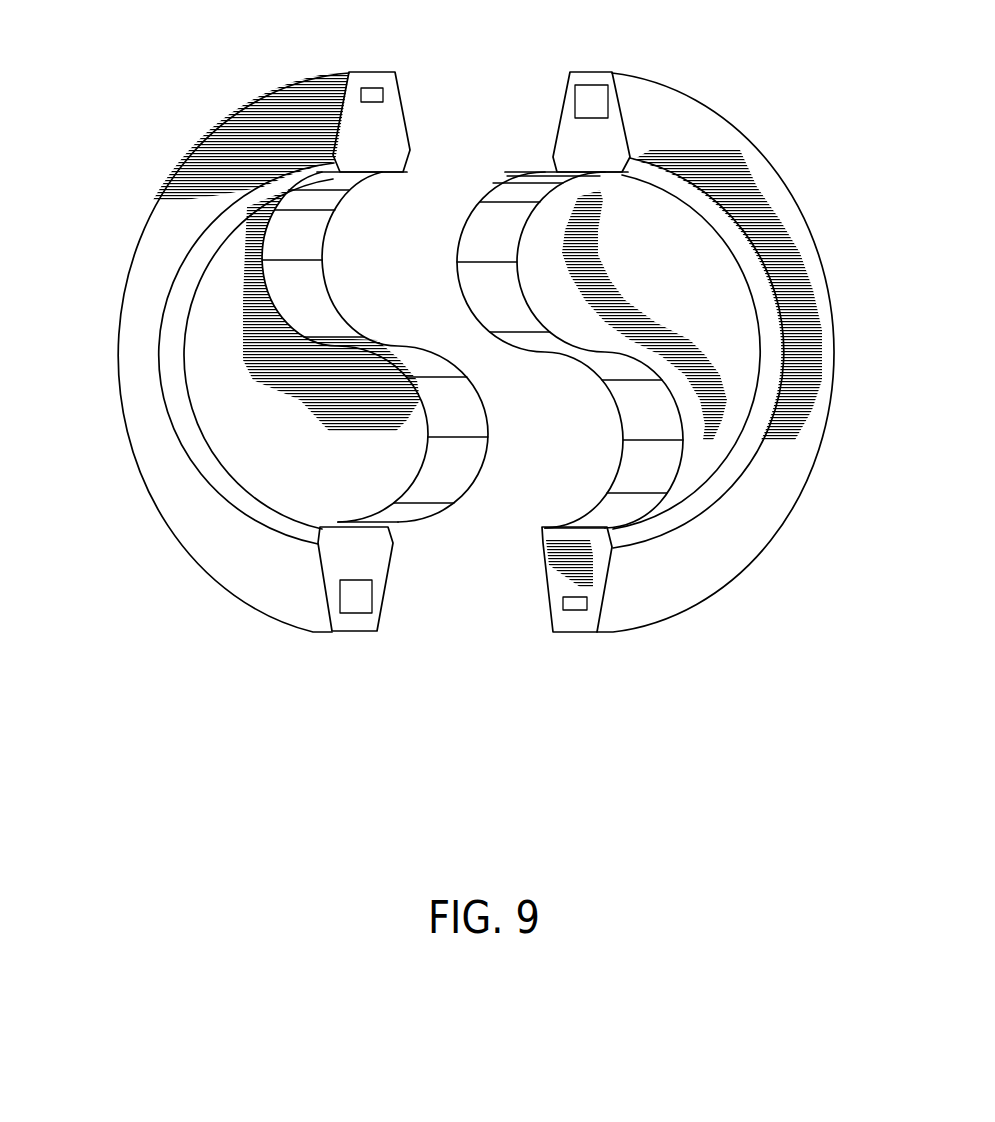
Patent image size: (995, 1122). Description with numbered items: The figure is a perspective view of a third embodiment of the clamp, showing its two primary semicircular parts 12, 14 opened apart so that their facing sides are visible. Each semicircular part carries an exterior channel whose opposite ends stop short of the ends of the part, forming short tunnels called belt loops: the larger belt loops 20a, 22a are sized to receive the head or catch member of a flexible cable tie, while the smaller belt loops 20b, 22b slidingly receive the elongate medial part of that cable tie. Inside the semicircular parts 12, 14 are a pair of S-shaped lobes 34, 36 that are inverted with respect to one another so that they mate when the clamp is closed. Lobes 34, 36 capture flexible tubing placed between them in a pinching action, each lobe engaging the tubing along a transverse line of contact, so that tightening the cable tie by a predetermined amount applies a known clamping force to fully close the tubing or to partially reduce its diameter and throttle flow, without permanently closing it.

The semicircular part 12 is at (136, 226).
The semicircular part 14 is at (784, 172).
The belt loop 20a is at (366, 94).
The belt loop 20b is at (370, 592).
The belt loop 22a is at (580, 103).
The belt loop 22b is at (578, 604).
The S-shaped lobe 34 is at (308, 253).
The S-shaped lobe 36 is at (490, 245).